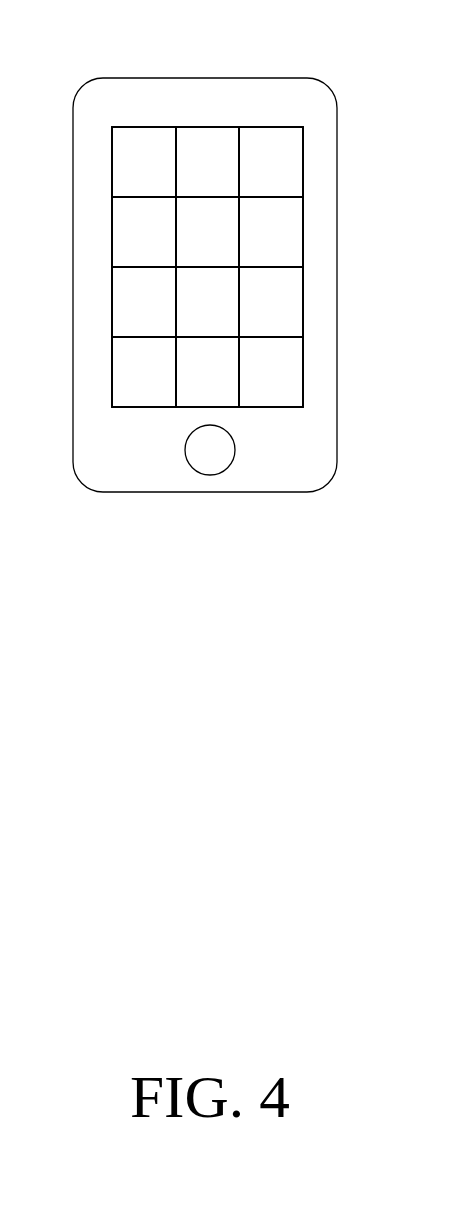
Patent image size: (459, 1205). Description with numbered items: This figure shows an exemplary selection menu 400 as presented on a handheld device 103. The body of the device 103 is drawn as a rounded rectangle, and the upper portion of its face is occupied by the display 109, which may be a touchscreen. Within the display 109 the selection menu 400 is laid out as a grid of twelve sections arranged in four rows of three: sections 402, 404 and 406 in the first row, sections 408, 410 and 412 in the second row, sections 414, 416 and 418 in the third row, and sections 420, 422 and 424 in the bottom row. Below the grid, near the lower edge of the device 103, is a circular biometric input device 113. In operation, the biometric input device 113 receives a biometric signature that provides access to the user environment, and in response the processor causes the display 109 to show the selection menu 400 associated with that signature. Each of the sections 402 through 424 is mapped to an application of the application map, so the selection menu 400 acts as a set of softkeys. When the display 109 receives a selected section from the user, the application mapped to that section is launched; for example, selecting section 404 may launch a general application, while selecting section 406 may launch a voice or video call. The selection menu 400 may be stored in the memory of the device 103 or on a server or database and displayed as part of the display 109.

The selection menu 400 is at (347, 39).
The device 103 is at (73, 183).
The display 109 is at (303, 320).
The biometric input device 113 is at (210, 475).
The section 402 is at (144, 162).
The section 404 is at (207, 162).
The section 406 is at (271, 162).
The section 408 is at (144, 232).
The section 410 is at (207, 232).
The section 412 is at (271, 232).
The section 414 is at (144, 302).
The section 416 is at (207, 302).
The section 418 is at (271, 302).
The section 420 is at (144, 372).
The section 422 is at (207, 372).
The section 424 is at (271, 372).